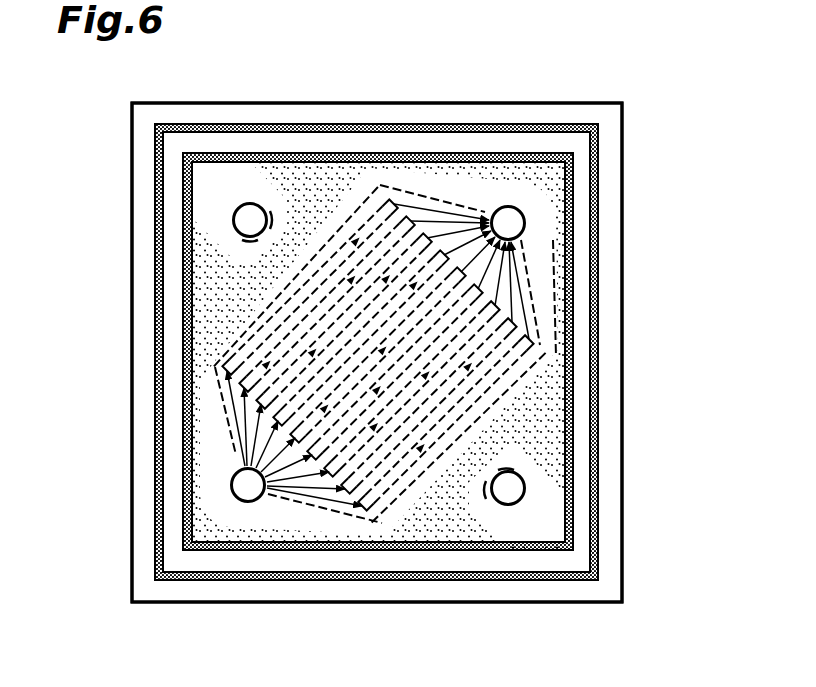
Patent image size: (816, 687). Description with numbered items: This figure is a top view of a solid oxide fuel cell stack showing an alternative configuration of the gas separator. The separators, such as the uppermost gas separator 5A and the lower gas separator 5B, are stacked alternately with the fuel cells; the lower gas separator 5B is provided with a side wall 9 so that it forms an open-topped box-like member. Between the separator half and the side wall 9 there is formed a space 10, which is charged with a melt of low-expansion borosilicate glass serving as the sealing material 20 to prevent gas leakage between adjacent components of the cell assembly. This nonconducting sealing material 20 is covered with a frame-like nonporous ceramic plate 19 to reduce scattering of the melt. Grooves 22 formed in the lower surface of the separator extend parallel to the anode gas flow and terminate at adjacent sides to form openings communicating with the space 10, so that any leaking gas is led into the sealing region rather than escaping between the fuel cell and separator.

The uppermost gas separator 5A is at (196, 266).
The lower gas separator 5B is at (124, 320).
The side wall 9 is at (620, 341).
The space 10 is at (603, 223).
The frame-like nonporous ceramic plate 19 is at (531, 148).
The sealing material 20 is at (288, 172).
The grooves 22 is at (320, 197).